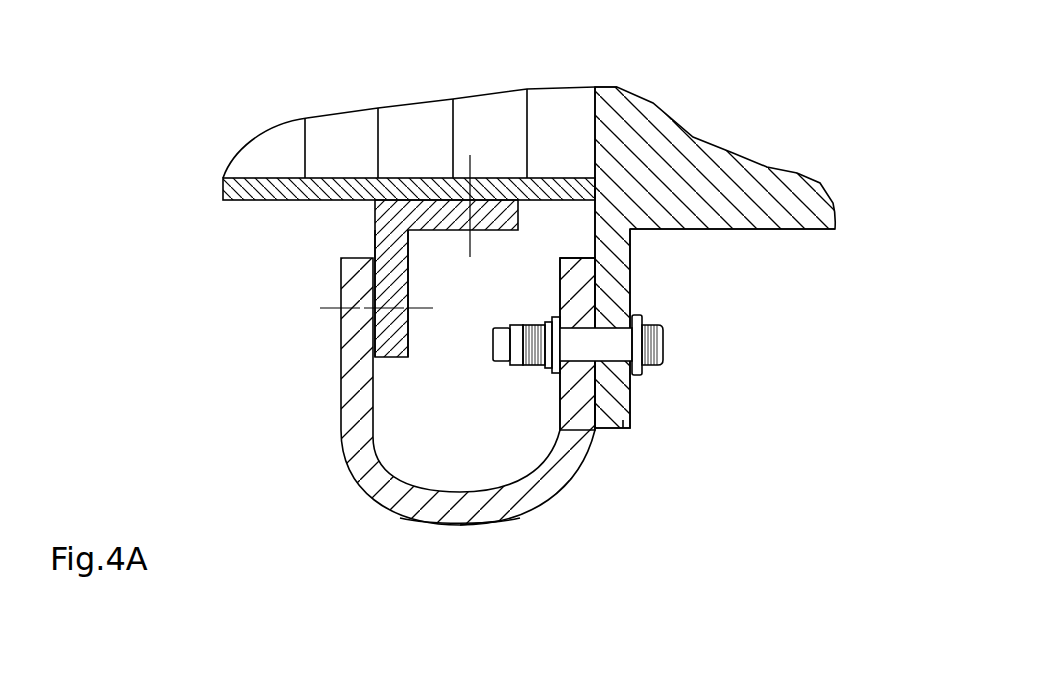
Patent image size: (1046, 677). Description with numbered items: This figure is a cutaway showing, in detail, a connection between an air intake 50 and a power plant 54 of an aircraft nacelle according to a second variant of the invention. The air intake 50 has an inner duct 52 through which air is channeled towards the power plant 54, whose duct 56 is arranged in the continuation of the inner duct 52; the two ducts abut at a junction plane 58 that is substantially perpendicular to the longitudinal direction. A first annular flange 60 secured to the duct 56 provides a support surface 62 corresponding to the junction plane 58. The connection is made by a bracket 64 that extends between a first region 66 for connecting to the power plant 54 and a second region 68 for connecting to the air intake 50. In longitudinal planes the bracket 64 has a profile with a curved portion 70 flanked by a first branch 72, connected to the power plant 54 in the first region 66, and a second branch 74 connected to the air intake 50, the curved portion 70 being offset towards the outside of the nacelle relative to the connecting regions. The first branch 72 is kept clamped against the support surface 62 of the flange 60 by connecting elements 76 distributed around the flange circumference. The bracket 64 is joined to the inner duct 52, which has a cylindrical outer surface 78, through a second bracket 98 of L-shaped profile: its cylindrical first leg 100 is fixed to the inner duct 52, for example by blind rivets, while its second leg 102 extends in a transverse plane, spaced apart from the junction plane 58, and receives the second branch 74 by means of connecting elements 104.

The air intake 50 is at (328, 104).
The inner duct 52 is at (455, 100).
The power plant 54 is at (799, 247).
The duct 56 is at (722, 158).
The junction plane 58 is at (617, 128).
The first annular flange 60 is at (623, 432).
The support surface 62 is at (590, 232).
The bracket 64 is at (489, 546).
The first region 66 is at (595, 390).
The second region 68 is at (414, 180).
The curved portion 70 is at (428, 507).
The first branch 72 is at (596, 289).
The second branch 74 is at (352, 386).
The connecting elements 76 is at (658, 361).
The cylindrical outer surface 78 is at (243, 195).
The second bracket 98 is at (360, 238).
The first leg 100 is at (513, 243).
The second leg 102 is at (408, 348).
The connecting elements 104 is at (431, 318).